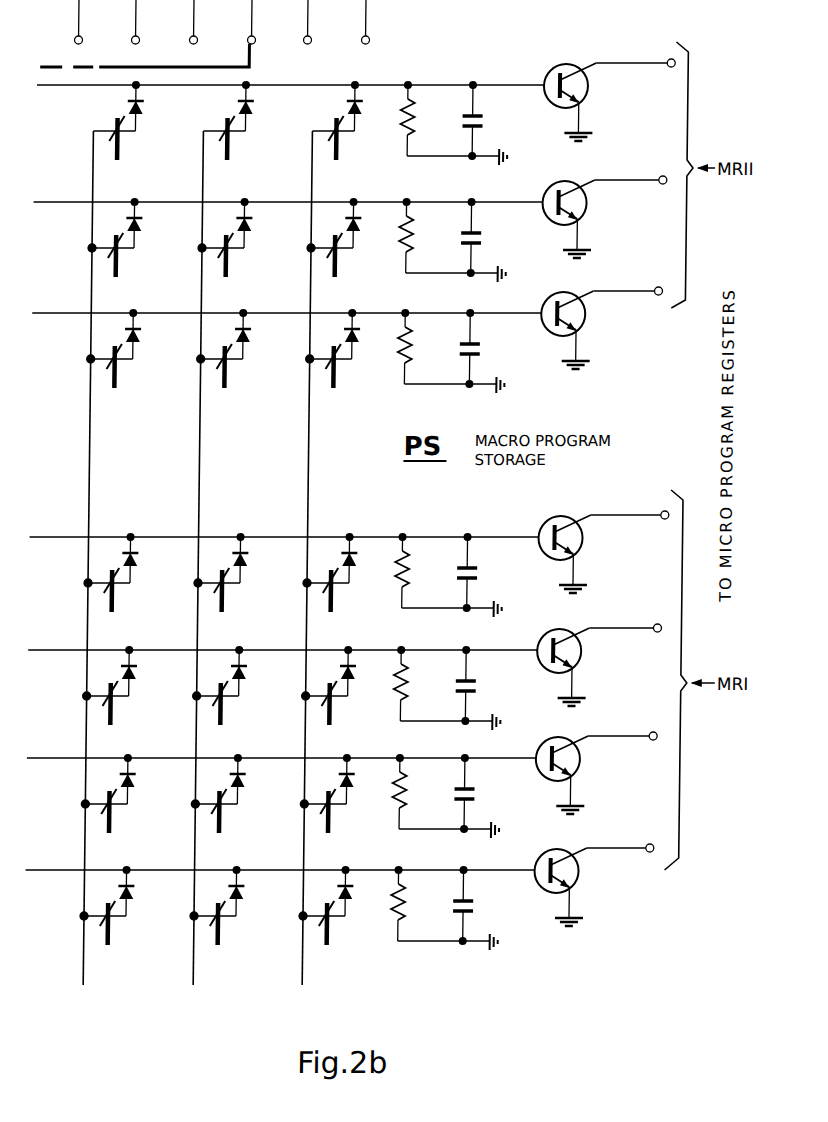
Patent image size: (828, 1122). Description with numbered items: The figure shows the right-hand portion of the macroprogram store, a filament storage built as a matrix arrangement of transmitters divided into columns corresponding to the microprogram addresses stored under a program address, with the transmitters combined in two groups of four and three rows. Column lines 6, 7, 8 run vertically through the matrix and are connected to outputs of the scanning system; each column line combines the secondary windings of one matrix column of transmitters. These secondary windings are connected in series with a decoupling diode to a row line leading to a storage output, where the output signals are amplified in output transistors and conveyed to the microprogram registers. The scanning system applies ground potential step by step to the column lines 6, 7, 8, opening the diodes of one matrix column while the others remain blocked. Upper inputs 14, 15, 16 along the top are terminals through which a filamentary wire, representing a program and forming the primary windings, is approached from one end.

The column line 6 is at (90, 574).
The column line 7 is at (200, 574).
The column line 8 is at (309, 574).
The upper input 14 is at (262, 25).
The upper input 15 is at (318, 25).
The upper input 16 is at (376, 25).